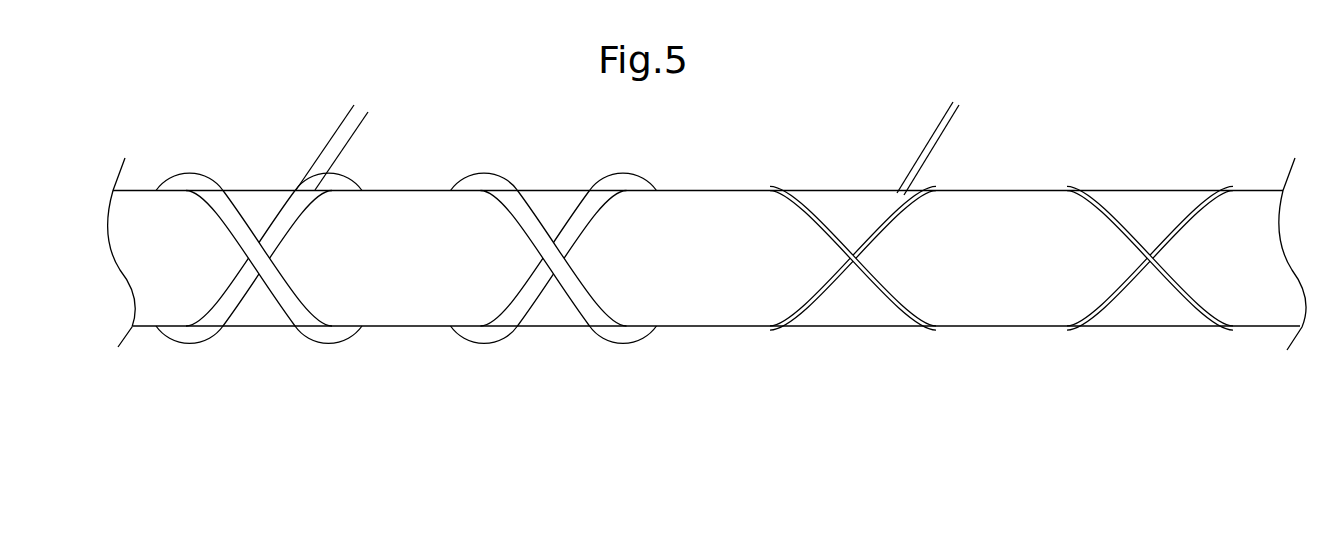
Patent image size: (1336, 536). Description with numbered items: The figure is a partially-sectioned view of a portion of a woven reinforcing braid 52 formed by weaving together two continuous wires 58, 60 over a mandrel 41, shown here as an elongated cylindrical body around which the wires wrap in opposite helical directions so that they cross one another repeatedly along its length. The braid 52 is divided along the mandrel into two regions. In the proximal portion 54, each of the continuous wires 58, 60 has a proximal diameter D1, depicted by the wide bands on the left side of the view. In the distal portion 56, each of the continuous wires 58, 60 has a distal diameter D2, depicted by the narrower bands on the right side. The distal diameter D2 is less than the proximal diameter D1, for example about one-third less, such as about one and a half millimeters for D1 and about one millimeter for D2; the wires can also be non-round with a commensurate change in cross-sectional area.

The mandrel 41 is at (995, 307).
The reinforcing braid 52 is at (775, 148).
The proximal portion 54 is at (381, 240).
The distal portion 56 is at (1255, 143).
The continuous wire 58 is at (192, 333).
The continuous wire 60 is at (333, 333).
The proximal diameter D1 is at (303, 78).
The distal diameter D2 is at (908, 78).